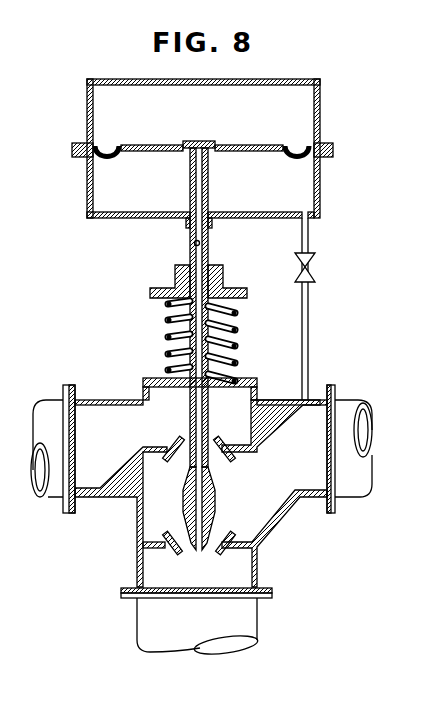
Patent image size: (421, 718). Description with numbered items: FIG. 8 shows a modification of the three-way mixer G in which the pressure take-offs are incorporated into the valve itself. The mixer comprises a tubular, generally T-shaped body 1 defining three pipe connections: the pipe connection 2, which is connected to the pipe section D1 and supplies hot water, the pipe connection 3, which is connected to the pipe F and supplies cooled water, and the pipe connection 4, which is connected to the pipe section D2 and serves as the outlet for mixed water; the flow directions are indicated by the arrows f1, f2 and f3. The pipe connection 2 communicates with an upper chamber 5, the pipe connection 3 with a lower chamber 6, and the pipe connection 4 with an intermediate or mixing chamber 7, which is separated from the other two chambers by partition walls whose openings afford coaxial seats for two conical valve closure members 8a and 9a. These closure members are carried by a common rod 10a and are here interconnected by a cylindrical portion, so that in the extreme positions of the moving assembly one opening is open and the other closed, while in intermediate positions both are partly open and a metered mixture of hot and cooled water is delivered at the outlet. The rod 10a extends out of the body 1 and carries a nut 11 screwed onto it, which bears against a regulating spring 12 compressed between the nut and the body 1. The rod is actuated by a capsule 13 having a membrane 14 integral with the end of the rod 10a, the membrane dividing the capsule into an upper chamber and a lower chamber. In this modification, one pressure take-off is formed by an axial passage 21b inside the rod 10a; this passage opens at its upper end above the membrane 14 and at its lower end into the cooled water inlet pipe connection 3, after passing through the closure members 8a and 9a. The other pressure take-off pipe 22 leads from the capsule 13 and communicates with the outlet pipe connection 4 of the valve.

The capsule 13 is at (87, 100).
The membrane 14 is at (126, 150).
The rod 10a is at (214, 182).
The axial passage 21b is at (194, 243).
The nut 11 is at (175, 292).
The regulating spring 12 is at (166, 320).
The body 1 is at (146, 393).
The upper chamber 5 is at (139, 428).
The intermediate or mixing chamber 7 is at (161, 493).
The lower chamber 6 is at (161, 576).
The pipe connection 2 is at (86, 500).
The pipe connection 3 is at (137, 560).
The pipe connection 4 is at (301, 498).
The valve closure member 8a is at (216, 470).
The valve closure member 9a is at (224, 540).
The pressure take-off pipe 22 is at (309, 333).
The pipe section D1 is at (50, 396).
The pipe section D2 is at (347, 397).
The pipe F is at (136, 632).
The three-way mixer G is at (100, 394).
The flow direction 1 f1 is at (27, 448).
The flow direction 2 f2 is at (197, 566).
The flow direction 3 f3 is at (358, 450).